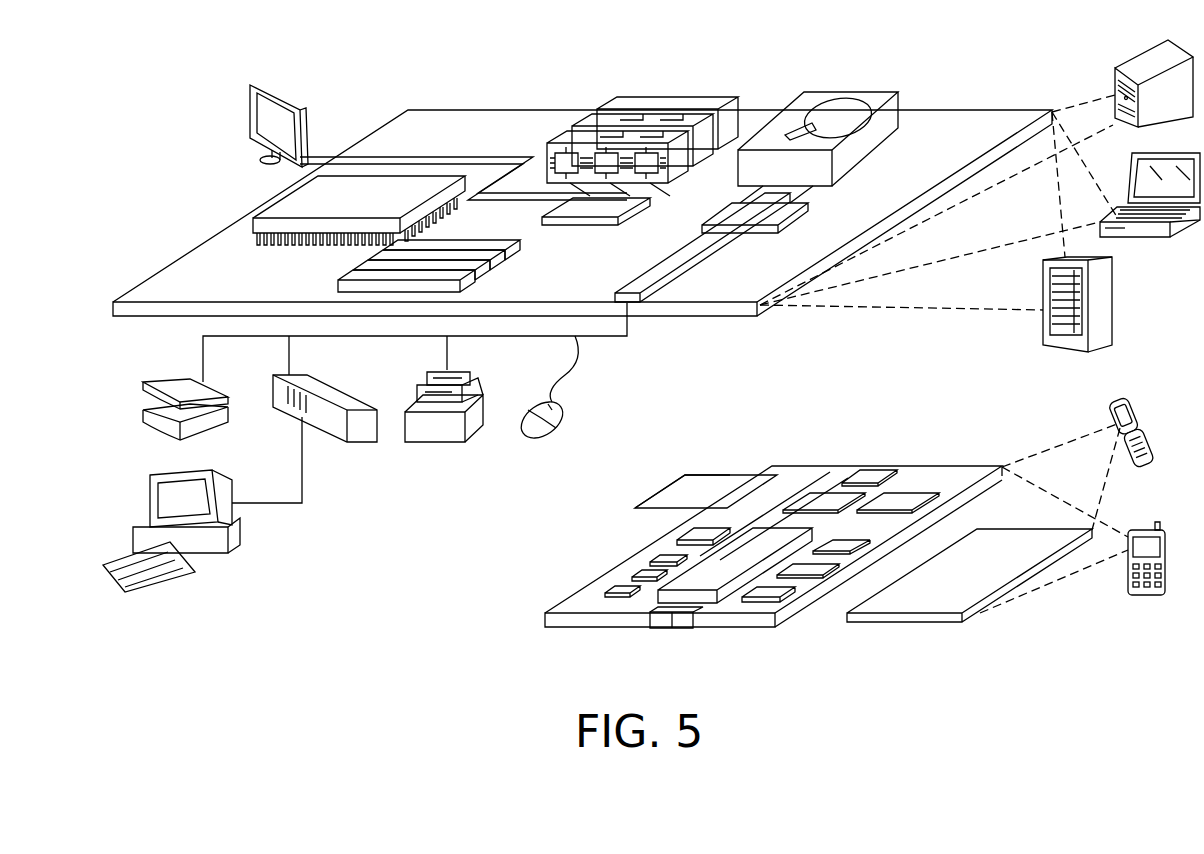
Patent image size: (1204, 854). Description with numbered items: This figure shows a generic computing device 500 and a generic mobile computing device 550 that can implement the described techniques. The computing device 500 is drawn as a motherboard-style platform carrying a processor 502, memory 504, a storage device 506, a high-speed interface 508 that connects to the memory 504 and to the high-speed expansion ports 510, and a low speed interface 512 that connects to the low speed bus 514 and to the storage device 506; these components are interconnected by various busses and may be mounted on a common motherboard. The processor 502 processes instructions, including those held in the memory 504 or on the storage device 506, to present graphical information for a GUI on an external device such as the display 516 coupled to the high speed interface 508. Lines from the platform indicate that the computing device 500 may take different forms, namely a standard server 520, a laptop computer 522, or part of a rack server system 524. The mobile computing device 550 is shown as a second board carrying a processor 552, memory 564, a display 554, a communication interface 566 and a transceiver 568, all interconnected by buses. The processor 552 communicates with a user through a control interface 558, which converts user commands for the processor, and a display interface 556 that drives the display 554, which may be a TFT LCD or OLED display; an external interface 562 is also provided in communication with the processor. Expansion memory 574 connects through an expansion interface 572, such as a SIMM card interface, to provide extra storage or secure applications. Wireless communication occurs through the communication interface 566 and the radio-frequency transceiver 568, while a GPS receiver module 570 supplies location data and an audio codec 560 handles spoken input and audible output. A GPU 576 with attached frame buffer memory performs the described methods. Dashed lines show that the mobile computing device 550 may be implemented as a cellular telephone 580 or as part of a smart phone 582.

The computing device 500 is at (366, 63).
The processor 502 is at (275, 197).
The memory 504 is at (667, 105).
The storage device 506 is at (868, 88).
The high-speed interface 508 is at (605, 222).
The high-speed expansion ports 510 is at (360, 270).
The low speed interface 512 is at (735, 210).
The low speed bus 514 is at (633, 292).
The display 516 is at (258, 85).
The standard server 520 is at (1133, 62).
The laptop computer 522 is at (1182, 153).
The rack server system 524 is at (1112, 304).
The mobile computer device 550 is at (505, 636).
The processor 552 is at (715, 585).
The display 554 is at (1000, 540).
The display interface 556 is at (743, 585).
The control interface 558 is at (808, 566).
The audio codec 560 is at (843, 545).
The external interface 562 is at (673, 615).
The memory 564 is at (635, 578).
The communication interface 566 is at (823, 492).
The transceiver 568 is at (903, 492).
The GPS receiver module 570 is at (865, 475).
The expansion interface 572 is at (757, 475).
The expansion memory 574 is at (685, 475).
The GPU 576 is at (680, 540).
The cellular telephone 580 is at (1128, 398).
The smart phone 582 is at (1138, 528).